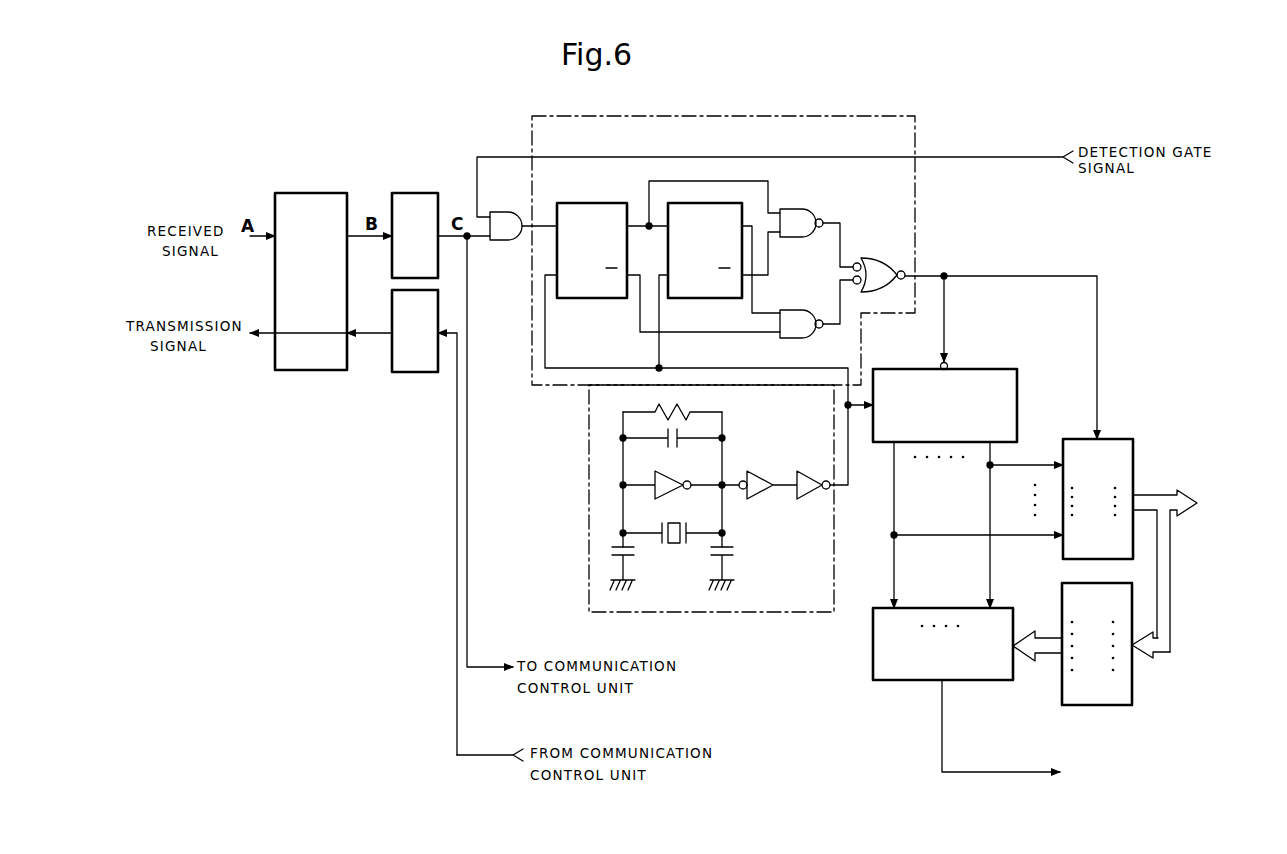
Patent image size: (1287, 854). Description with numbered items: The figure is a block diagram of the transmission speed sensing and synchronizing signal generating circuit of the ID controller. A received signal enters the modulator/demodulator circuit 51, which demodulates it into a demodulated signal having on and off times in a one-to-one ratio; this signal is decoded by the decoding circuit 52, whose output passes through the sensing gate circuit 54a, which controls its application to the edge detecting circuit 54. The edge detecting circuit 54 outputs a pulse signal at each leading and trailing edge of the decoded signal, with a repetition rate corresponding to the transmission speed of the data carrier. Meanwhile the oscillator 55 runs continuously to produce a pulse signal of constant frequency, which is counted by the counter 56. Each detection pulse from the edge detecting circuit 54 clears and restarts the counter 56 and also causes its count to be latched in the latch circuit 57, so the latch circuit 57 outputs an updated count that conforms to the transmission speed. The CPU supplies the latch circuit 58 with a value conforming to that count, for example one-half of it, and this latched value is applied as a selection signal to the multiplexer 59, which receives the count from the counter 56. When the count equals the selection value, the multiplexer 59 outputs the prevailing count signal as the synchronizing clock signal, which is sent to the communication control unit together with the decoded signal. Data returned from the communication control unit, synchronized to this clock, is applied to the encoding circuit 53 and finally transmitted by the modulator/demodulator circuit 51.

The modulator/demodulator circuit 51 is at (310, 192).
The decoding circuit 52 is at (418, 192).
The encoding circuit 53 is at (414, 373).
The edge detecting circuit 54 is at (812, 116).
The sensing gate circuit 54a is at (504, 211).
The oscillator 55 is at (725, 613).
The counter 56 is at (960, 369).
The latch circuit 57 is at (1115, 437).
The latch circuit 58 is at (1093, 705).
The multiplexer 59 is at (888, 683).